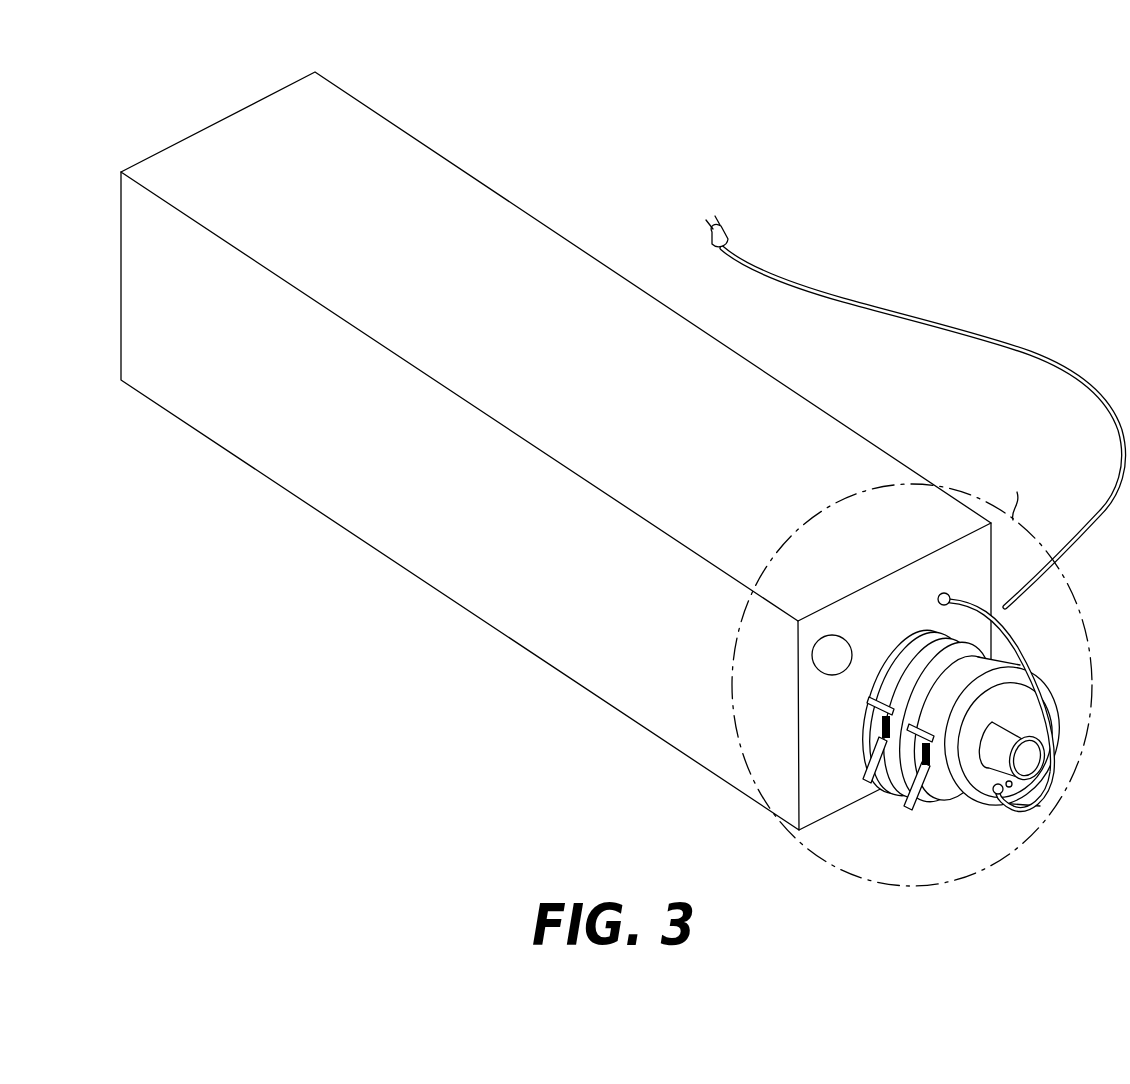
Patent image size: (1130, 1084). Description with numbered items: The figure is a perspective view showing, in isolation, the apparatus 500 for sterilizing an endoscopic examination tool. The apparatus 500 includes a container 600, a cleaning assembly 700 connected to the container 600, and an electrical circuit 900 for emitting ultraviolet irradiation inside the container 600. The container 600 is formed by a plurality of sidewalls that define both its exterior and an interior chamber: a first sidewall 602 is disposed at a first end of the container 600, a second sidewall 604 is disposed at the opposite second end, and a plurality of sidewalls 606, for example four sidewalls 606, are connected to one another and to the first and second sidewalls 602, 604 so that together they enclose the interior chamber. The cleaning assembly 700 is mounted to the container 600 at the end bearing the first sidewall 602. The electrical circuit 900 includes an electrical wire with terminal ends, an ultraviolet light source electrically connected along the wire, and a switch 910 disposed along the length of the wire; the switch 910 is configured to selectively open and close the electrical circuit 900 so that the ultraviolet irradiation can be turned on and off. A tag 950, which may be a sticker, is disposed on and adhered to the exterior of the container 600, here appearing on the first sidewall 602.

The apparatus 500 is at (836, 51).
The container 600 is at (478, 126).
The first sidewall 602 is at (832, 777).
The second sidewall 604 is at (138, 131).
The sidewalls 606 is at (303, 442).
The cleaning assembly 700 is at (900, 816).
The electrical circuit 900 is at (974, 318).
The switch 910 is at (1010, 796).
The tag 950 is at (813, 667).